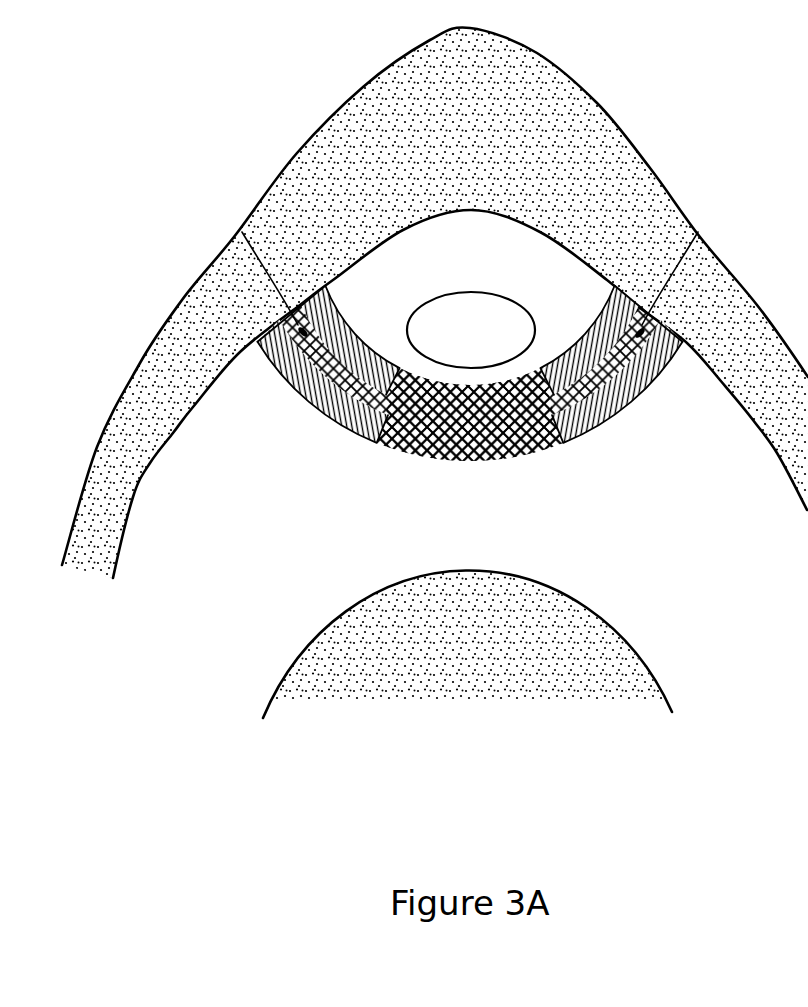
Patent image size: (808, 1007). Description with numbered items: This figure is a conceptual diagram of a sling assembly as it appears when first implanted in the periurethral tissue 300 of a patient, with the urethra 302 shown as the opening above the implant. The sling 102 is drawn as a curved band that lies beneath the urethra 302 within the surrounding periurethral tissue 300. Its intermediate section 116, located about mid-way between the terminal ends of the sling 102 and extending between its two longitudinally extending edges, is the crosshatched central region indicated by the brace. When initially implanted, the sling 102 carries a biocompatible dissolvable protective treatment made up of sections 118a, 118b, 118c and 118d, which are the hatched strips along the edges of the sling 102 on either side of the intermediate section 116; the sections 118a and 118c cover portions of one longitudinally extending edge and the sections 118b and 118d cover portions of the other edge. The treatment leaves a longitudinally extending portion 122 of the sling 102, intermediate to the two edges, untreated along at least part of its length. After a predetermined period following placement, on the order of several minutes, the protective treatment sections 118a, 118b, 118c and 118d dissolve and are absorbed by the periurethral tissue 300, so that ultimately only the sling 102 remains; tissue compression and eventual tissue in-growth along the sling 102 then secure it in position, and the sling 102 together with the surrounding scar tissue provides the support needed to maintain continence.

The periurethral tissue 300 is at (623, 133).
The urethra 302 is at (464, 294).
The longitudinally extending portion 122 is at (212, 217).
The sling 102 is at (468, 404).
The intermediate section 116 is at (390, 470).
The protective treatment section 118a is at (343, 317).
The protective treatment section 118b is at (293, 387).
The protective treatment section 118c is at (598, 312).
The protective treatment section 118d is at (647, 382).